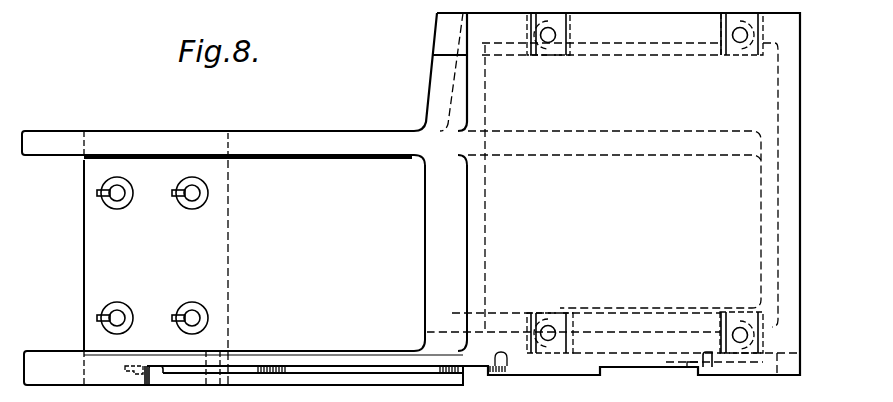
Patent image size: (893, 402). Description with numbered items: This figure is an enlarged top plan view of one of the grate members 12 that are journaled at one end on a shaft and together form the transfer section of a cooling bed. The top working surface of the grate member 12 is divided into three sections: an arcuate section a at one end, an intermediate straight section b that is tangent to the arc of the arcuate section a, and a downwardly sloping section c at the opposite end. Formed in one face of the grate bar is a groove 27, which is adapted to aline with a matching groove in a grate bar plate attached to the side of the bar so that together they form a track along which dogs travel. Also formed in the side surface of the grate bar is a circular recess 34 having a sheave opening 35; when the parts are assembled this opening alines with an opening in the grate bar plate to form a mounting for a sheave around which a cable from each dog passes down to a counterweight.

The arcuate section a is at (726, 202).
The straight section b is at (278, 139).
The downwardly sloping section c is at (45, 142).
The grate member 12 is at (352, 178).
The groove 27 is at (196, 368).
The circular recess 34 is at (678, 368).
The sheave opening 35 is at (712, 357).